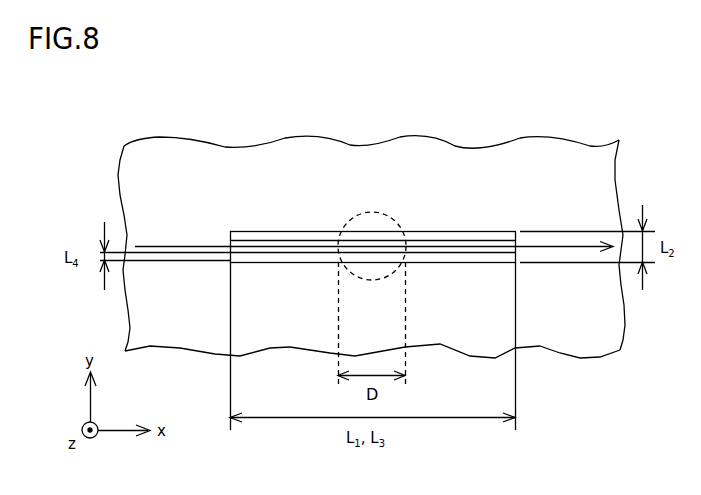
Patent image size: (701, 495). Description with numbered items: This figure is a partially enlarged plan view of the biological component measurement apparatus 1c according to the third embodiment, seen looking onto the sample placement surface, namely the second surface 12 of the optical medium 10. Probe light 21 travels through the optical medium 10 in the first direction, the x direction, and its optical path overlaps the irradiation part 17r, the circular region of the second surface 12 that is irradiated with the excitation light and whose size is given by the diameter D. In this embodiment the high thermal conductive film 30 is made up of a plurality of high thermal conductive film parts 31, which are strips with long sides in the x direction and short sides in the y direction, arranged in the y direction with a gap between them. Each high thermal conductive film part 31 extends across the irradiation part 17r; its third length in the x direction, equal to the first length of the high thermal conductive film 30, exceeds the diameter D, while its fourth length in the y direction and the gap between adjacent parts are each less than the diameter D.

The biological component measurement apparatus 1c is at (388, 226).
The optical medium 10 is at (161, 348).
The second surface 12 is at (596, 325).
The irradiation part 17r is at (365, 212).
The probe light 21 is at (175, 242).
The high thermal conductive film 30 is at (373, 159).
The high thermal conductive film parts 31 is at (455, 231).